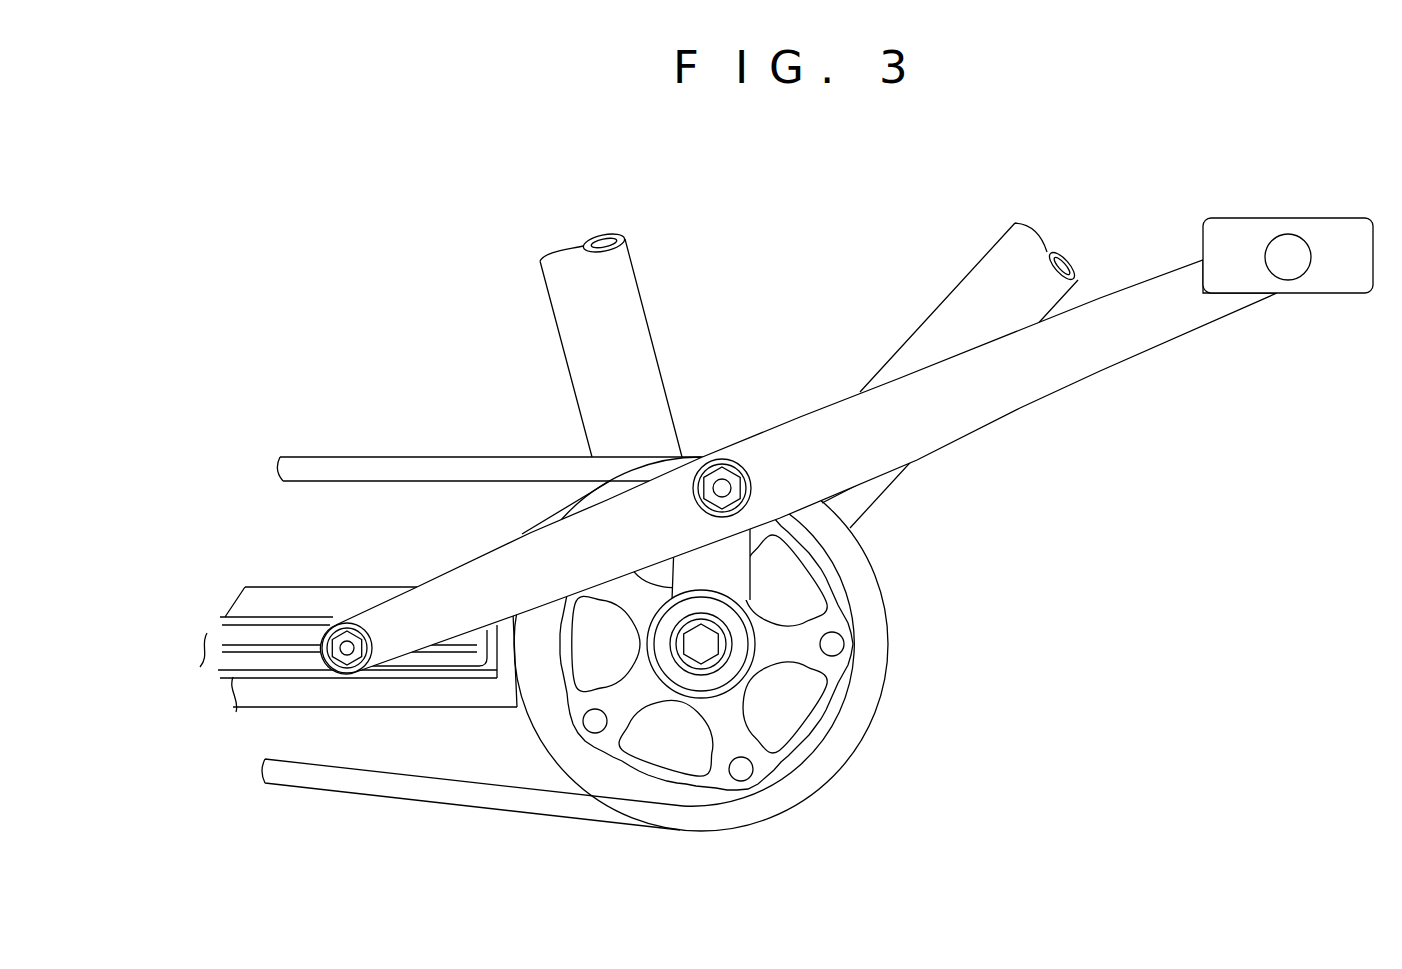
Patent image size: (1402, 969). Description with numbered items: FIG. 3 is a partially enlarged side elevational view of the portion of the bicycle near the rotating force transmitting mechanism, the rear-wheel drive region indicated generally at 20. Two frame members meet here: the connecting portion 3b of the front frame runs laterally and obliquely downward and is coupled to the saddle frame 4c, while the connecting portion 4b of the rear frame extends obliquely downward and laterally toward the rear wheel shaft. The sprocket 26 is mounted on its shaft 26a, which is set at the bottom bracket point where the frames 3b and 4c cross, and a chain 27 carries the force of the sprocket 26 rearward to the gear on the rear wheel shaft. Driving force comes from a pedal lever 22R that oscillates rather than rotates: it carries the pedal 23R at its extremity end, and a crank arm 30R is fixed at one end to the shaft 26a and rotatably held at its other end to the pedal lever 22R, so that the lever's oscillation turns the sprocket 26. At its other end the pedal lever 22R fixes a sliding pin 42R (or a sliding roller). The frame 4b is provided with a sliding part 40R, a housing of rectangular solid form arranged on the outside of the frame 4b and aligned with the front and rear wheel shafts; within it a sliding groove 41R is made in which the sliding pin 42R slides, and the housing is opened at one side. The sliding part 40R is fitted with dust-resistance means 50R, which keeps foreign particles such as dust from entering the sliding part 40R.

The connecting portion 3b is at (942, 318).
The connecting portion 4b is at (366, 585).
The saddle frame 4c is at (558, 315).
The rear wheel drive unit 20 is at (754, 667).
The pedal lever 22R is at (1102, 362).
The pedal 23R is at (1330, 280).
The sprocket 26 is at (610, 780).
The shaft of sprocket 26a is at (707, 652).
The chain 27 is at (433, 790).
The crank arm 30R is at (728, 565).
The sliding part 40R is at (284, 632).
The sliding groove 41R is at (273, 658).
The sliding pin 42R is at (347, 673).
The dust-resistance means 50R is at (215, 640).